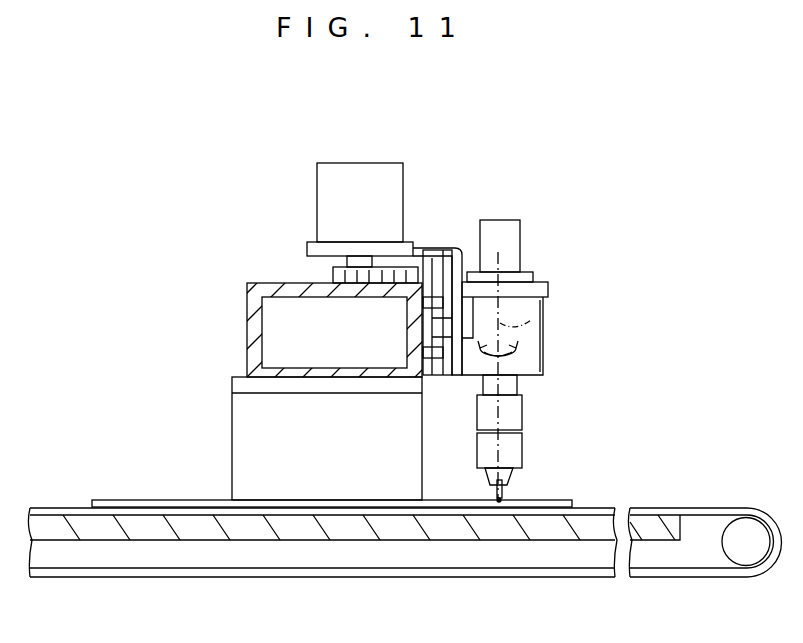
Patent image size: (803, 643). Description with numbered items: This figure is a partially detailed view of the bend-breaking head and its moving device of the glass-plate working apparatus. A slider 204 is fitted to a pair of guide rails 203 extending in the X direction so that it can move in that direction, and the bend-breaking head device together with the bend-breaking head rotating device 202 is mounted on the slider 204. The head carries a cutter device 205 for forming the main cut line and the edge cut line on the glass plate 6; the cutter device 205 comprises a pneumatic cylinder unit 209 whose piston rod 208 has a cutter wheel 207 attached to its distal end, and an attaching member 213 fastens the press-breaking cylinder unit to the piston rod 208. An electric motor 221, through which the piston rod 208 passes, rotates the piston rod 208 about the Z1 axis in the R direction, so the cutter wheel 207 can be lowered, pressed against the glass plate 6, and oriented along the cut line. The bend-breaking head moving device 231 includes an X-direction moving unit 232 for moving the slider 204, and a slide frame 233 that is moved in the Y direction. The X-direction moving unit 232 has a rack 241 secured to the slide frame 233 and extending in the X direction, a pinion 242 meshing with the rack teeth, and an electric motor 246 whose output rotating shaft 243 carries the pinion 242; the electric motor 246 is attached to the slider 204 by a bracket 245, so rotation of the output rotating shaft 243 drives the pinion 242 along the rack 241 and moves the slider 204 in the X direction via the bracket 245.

The glass plate 6 is at (167, 500).
The bend-breaking head rotating device 202 is at (551, 347).
The guide rails 203 is at (432, 297).
The slider 204 is at (466, 262).
The cutter device 205 is at (530, 470).
The cutter wheel 207 is at (499, 502).
The piston rod 208 is at (518, 386).
The pneumatic cylinder unit 209 is at (515, 262).
The attaching member 213 is at (516, 428).
The electric motor 221 is at (535, 309).
The bend-breaking head moving device 231 is at (298, 247).
The X-direction moving unit 232 is at (303, 181).
The slide frame 233 is at (247, 317).
The rack 241 is at (414, 281).
The pinion 242 is at (333, 276).
The output rotating shaft 243 is at (364, 262).
The bracket 245 is at (308, 248).
The electric motor 246 is at (347, 168).
The Z1 axis Z1 is at (536, 322).
The R direction R is at (530, 356).